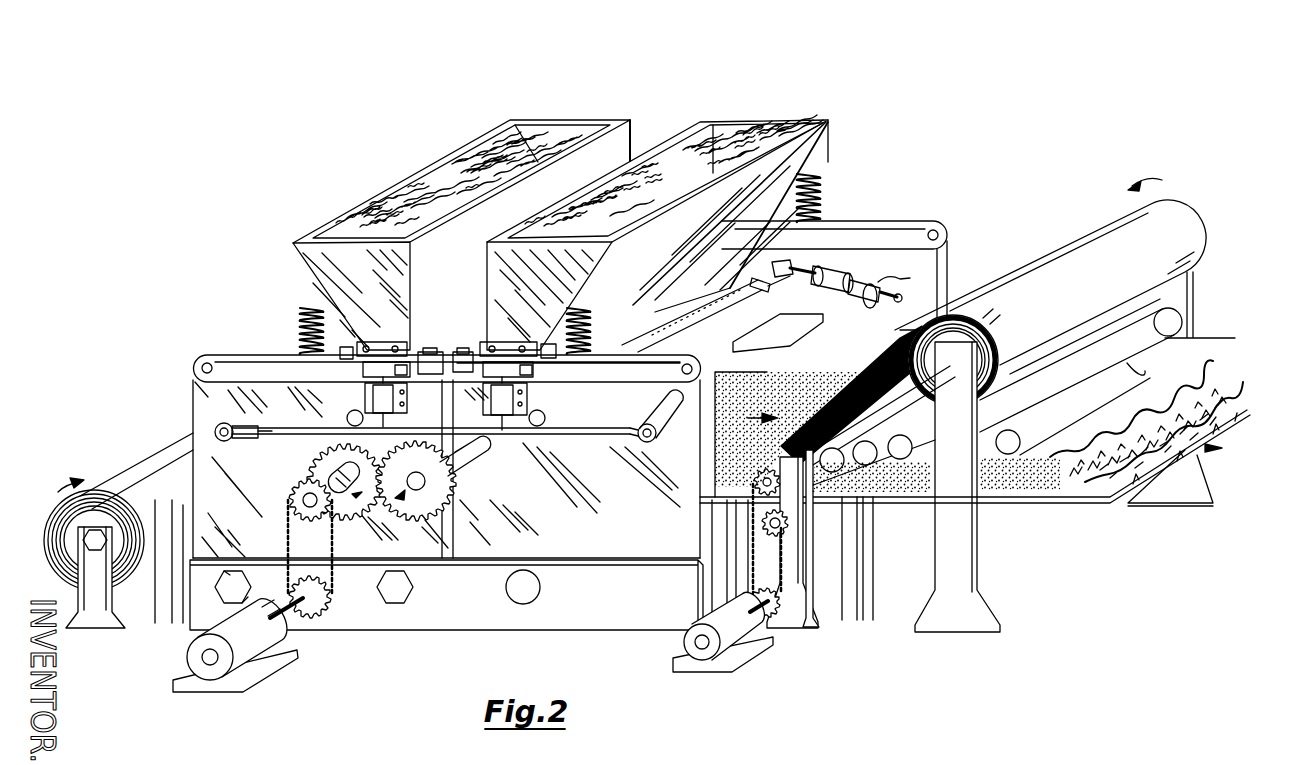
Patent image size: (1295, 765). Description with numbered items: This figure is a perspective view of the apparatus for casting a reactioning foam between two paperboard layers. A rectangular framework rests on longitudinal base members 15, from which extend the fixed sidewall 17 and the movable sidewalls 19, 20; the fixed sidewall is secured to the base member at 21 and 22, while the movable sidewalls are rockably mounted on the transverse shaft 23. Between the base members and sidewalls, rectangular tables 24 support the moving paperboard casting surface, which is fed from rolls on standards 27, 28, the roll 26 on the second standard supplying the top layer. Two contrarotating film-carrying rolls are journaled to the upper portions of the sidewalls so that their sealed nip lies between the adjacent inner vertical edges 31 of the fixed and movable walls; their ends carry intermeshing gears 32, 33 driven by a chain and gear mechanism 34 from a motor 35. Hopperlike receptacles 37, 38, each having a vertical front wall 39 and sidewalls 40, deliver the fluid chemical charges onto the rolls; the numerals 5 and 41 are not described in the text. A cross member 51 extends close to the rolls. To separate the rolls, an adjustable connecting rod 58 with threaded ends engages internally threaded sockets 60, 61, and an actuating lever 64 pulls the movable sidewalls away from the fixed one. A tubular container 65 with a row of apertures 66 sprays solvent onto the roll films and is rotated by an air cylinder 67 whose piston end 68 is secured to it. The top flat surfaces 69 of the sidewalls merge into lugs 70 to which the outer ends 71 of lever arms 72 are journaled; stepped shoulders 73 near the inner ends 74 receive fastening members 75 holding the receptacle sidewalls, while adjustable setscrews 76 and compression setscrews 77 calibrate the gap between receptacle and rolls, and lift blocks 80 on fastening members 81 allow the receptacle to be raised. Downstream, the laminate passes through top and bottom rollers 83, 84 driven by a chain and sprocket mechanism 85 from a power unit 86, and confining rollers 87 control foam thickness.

The supply roll 5 is at (60, 538).
The base member 15 is at (446, 632).
The fixed sidewall 17 is at (210, 490).
The movable sidewall 19 is at (446, 469).
The movable sidewall 20 is at (925, 278).
The securing point 21 is at (230, 590).
The securing point 22 is at (398, 590).
The transverse shaft 23 is at (525, 604).
The rectangular table 24 is at (1100, 500).
The roll of paperboard 26 is at (1153, 222).
The standard 27 is at (93, 617).
The standard 28 is at (950, 537).
The inner vertical edge 31 is at (444, 542).
The gear 32 is at (328, 462).
The gear 33 is at (437, 482).
The chain and gear mechanism 34 is at (337, 580).
The motor 35 is at (247, 640).
The receptacle 37 is at (473, 180).
The receptacle 38 is at (727, 147).
The front wall 39 is at (457, 233).
The sidewall 40 is at (335, 243).
The hopper end wall 41 is at (292, 268).
The cross member 51 is at (778, 333).
The adjustable connecting rod 58 is at (577, 434).
The internally threaded socket 60 is at (247, 436).
The internally threaded socket 61 is at (635, 428).
The actuating lever 64 is at (668, 407).
The tubular container 65 is at (677, 330).
The aperture 66 is at (708, 307).
The air cylinder 67 is at (837, 288).
The piston end 68 is at (760, 283).
The top flat surface 69 is at (253, 380).
The lug 70 is at (200, 358).
The outer end 71 is at (233, 350).
The lever arm 72 is at (277, 347).
The stepped shoulder 73 is at (497, 345).
The inner end 74 is at (432, 372).
The fastening member 75 is at (380, 363).
The adjustable setscrew 76 is at (343, 380).
The compression setscrew 77 is at (300, 310).
The lift block 80 is at (500, 370).
The fastening member 81 is at (380, 352).
The top roller 83 is at (823, 477).
The bottom roller 84 is at (820, 510).
The chain and sprocket mechanism 85 is at (780, 587).
The power unit 86 is at (767, 643).
The confining roller 87 is at (1183, 318).